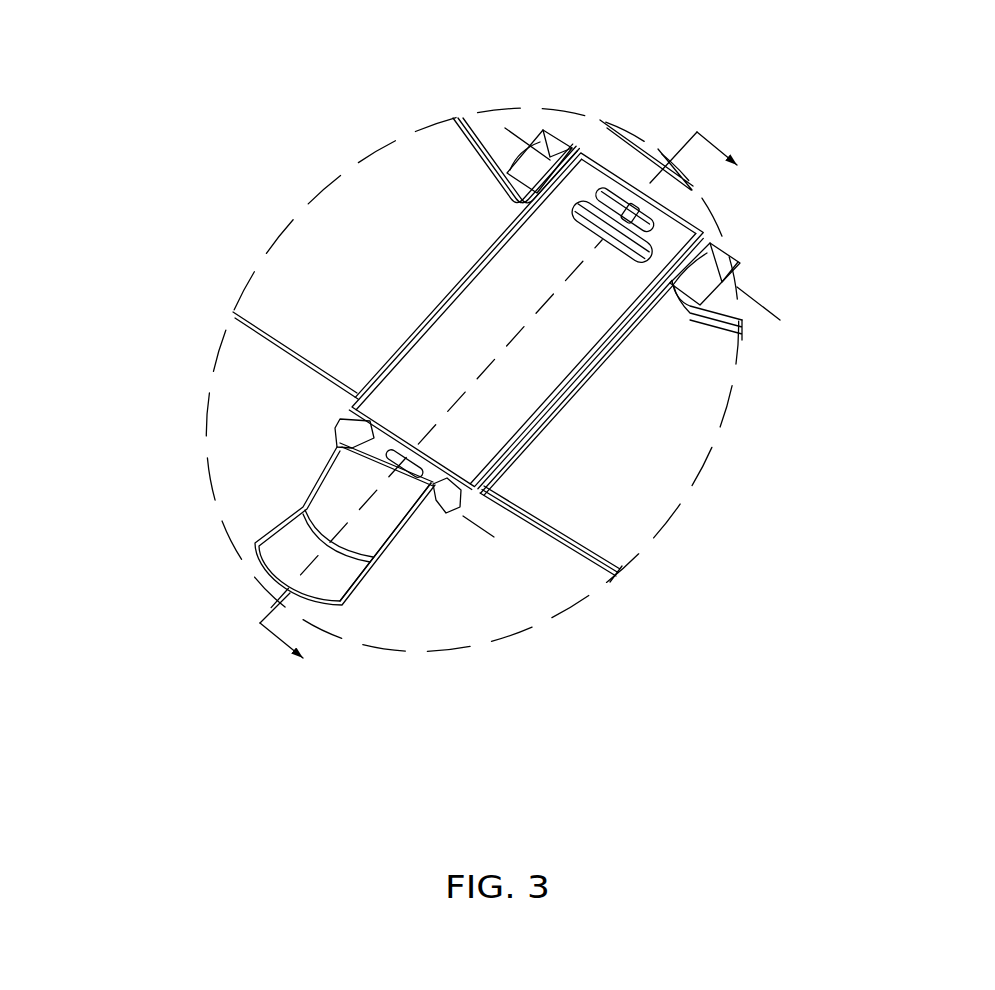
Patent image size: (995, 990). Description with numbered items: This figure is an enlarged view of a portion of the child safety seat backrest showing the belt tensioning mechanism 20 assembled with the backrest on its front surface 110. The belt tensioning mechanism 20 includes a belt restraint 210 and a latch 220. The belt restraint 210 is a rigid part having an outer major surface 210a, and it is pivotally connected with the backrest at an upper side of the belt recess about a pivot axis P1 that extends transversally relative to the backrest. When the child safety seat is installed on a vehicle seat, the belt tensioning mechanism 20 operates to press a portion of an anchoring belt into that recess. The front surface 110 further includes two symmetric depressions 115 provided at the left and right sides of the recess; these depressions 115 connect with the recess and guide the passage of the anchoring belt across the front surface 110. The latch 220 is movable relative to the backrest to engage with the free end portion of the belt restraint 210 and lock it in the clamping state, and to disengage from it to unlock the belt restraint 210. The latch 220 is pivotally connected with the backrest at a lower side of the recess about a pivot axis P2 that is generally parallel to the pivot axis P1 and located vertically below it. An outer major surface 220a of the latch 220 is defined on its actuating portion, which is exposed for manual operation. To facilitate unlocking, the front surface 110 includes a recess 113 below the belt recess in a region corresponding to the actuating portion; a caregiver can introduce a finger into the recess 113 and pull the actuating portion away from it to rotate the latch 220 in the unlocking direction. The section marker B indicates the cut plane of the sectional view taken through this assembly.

The belt tensioning mechanism 20 is at (210, 152).
The belt restraint 210 is at (436, 325).
The outer major surface 210a is at (520, 393).
The latch 220 is at (329, 471).
The outer major surface 220a is at (392, 517).
The recess 113 is at (282, 543).
The depressions 115 is at (410, 177).
The front surface 110 is at (567, 573).
The pivot axis P1 is at (757, 300).
The pivot axis P2 is at (479, 528).
The section line B is at (496, 393).